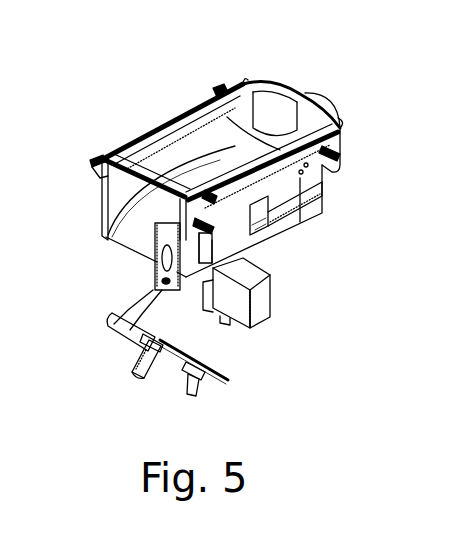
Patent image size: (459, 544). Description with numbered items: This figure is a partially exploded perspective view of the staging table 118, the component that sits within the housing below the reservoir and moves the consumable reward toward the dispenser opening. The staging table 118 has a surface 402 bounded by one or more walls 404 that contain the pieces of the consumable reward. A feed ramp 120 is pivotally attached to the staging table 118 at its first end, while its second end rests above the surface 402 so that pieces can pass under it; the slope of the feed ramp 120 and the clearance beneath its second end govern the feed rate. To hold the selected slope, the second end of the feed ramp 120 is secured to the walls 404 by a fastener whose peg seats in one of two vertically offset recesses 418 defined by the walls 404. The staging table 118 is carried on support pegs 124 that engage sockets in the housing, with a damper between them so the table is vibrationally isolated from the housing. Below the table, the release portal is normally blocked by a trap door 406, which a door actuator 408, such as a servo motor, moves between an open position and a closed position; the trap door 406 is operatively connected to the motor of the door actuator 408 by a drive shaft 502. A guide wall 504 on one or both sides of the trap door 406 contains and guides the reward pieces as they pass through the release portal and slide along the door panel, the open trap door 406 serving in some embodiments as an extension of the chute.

The staging table 118 is at (155, 107).
The feed ramp 120 is at (107, 234).
The support pegs 124 is at (220, 87).
The surface 402 is at (280, 140).
The walls 404 is at (303, 112).
The recesses 418 is at (305, 178).
The door actuator 408 is at (262, 298).
The guide wall 504 is at (143, 297).
The trap door 406 is at (118, 340).
The drive shaft 502 is at (232, 380).